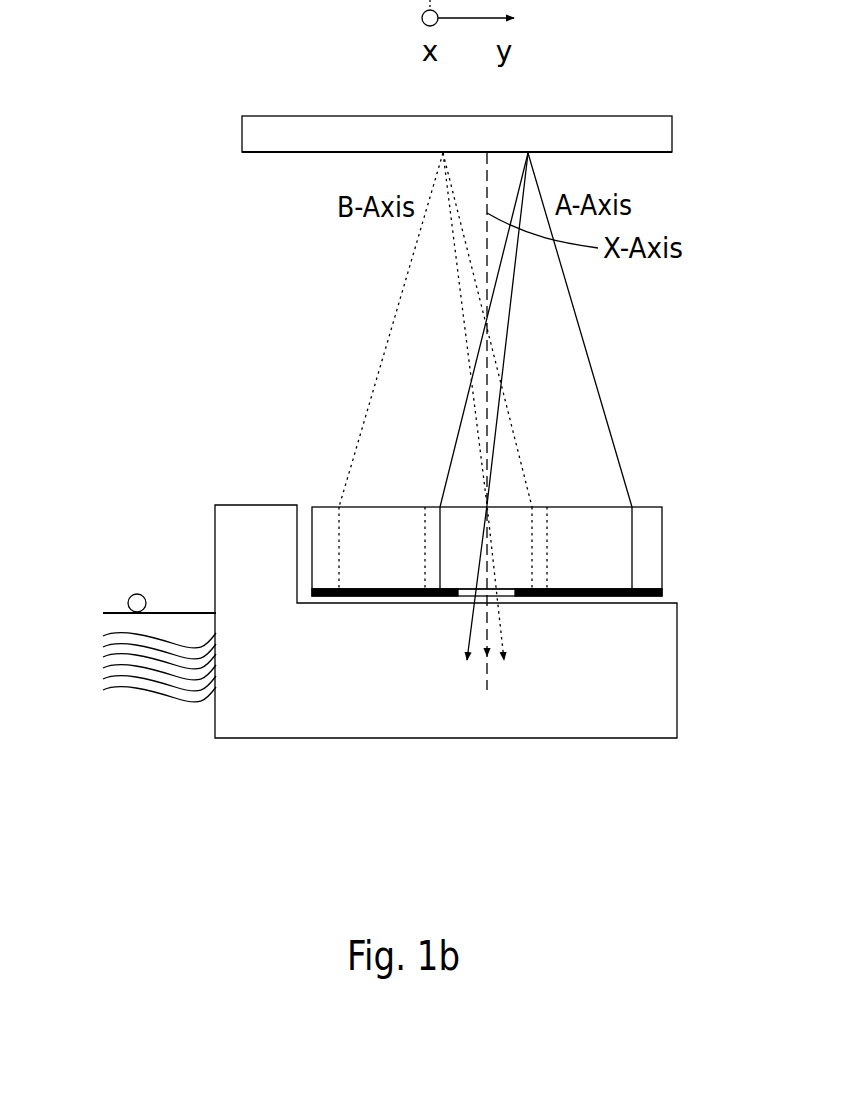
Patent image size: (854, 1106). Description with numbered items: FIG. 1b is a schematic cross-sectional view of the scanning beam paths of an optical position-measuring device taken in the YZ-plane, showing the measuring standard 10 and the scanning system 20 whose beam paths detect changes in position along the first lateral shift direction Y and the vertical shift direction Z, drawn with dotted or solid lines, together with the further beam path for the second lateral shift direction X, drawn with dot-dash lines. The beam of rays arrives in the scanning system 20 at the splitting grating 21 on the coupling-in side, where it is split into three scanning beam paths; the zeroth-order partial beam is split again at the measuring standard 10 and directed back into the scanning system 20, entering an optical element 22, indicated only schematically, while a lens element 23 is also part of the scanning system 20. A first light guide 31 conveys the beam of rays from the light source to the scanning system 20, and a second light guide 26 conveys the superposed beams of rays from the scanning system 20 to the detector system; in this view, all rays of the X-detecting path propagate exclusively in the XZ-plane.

The measuring standard 10 is at (222, 136).
The scanning system 20 is at (220, 760).
The splitting grating 21 is at (490, 505).
The optical element 22 is at (650, 553).
The lens element 23 is at (490, 505).
The second light guide 26 is at (100, 702).
The first light guide 31 is at (136, 594).